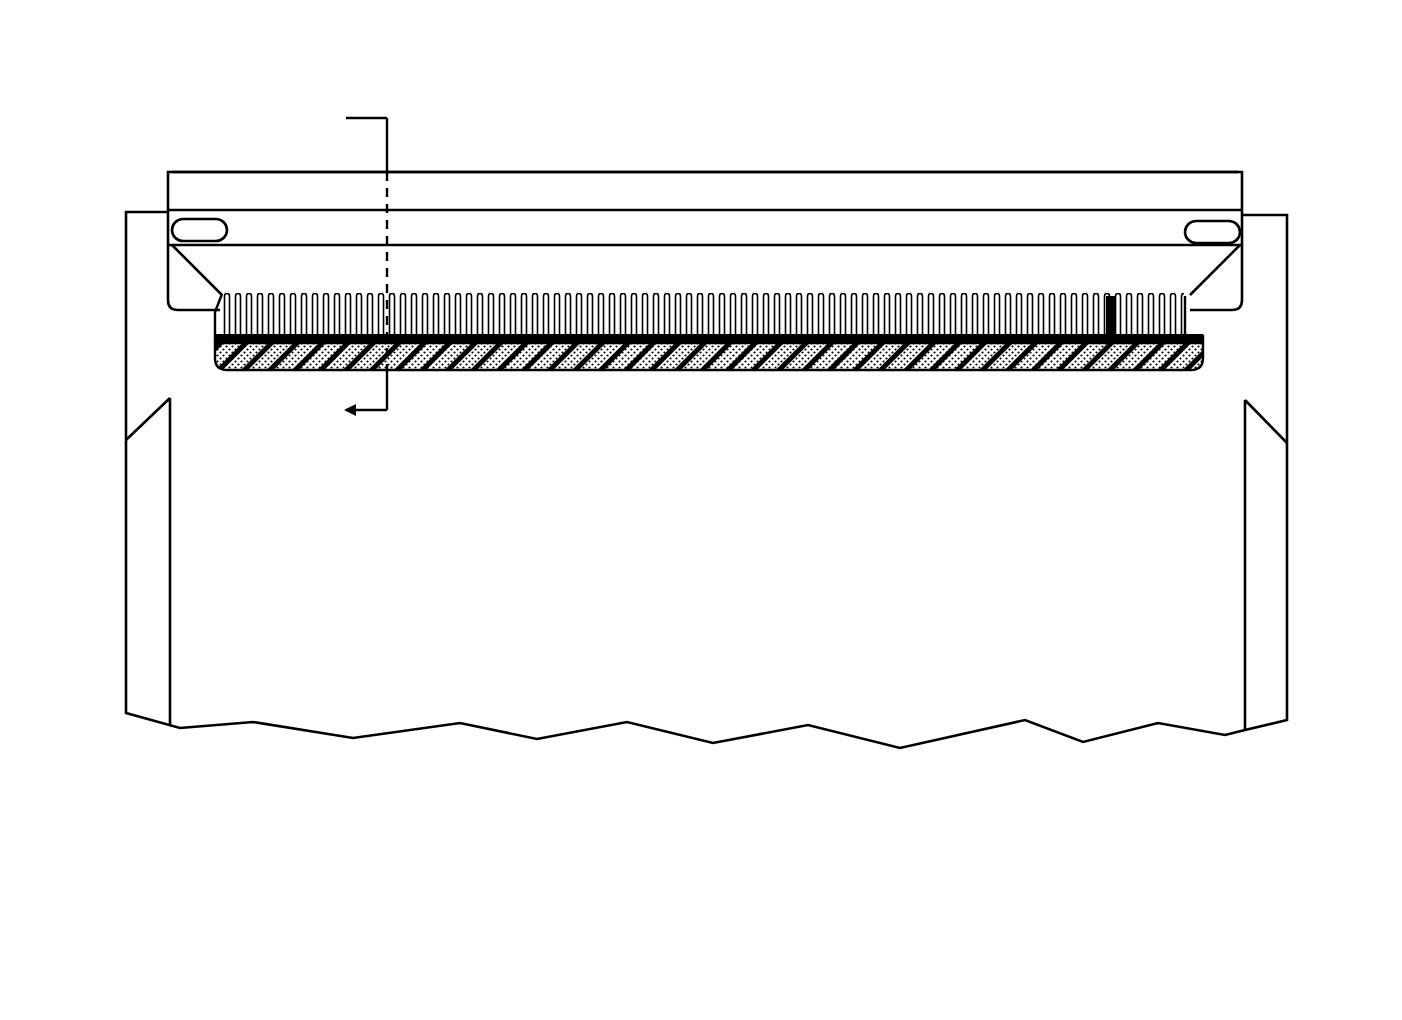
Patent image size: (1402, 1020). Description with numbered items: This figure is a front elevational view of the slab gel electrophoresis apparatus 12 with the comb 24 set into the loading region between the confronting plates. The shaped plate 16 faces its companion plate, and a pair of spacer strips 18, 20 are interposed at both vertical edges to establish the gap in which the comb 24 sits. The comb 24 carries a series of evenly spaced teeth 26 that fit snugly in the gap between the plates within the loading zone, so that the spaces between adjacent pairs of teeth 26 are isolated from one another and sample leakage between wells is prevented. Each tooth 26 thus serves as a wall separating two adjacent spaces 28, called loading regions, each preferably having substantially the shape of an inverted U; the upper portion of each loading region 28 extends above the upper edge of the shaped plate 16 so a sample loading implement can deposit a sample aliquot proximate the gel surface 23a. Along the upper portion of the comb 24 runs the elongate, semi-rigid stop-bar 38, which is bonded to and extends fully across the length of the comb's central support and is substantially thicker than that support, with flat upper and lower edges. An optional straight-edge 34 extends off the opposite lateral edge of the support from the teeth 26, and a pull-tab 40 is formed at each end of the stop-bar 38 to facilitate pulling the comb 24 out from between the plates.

The slab gel electrophoresis apparatus 12 is at (156, 132).
The plate 16 is at (723, 595).
The spacer strip 18 is at (164, 525).
The spacer strip 20 is at (1283, 528).
The gel surface 23a is at (1192, 338).
The comb 24 is at (584, 162).
The teeth 26 is at (1050, 345).
The loading region 28 is at (1107, 300).
The straight-edge 34 is at (612, 187).
The stop-bar 38 is at (734, 238).
The pull-tab 40 is at (206, 230).